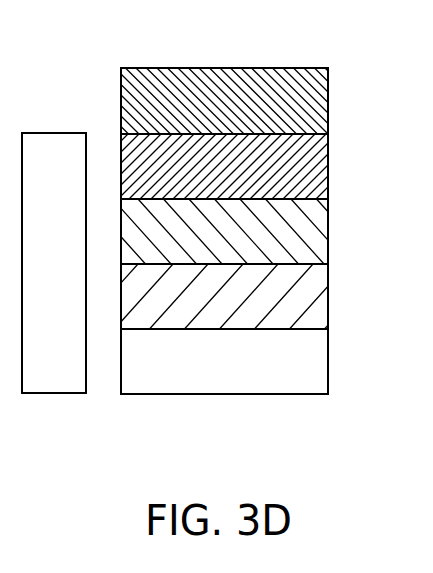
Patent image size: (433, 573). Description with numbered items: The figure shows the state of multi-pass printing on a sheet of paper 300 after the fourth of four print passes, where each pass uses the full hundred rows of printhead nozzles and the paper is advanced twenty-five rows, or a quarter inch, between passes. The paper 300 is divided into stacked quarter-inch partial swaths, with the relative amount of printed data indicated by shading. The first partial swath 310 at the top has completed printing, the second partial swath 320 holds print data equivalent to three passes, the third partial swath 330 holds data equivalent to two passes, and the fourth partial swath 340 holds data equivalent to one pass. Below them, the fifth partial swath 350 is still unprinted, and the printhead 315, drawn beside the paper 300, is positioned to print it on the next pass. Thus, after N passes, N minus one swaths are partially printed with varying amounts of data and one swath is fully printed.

The sheet of paper 300 is at (147, 418).
The first partial swath 310 is at (223, 77).
The printhead 315 is at (52, 140).
The second partial swath 320 is at (320, 165).
The third partial swath 330 is at (320, 222).
The fourth partial swath 340 is at (317, 293).
The fifth partial swath 350 is at (317, 365).